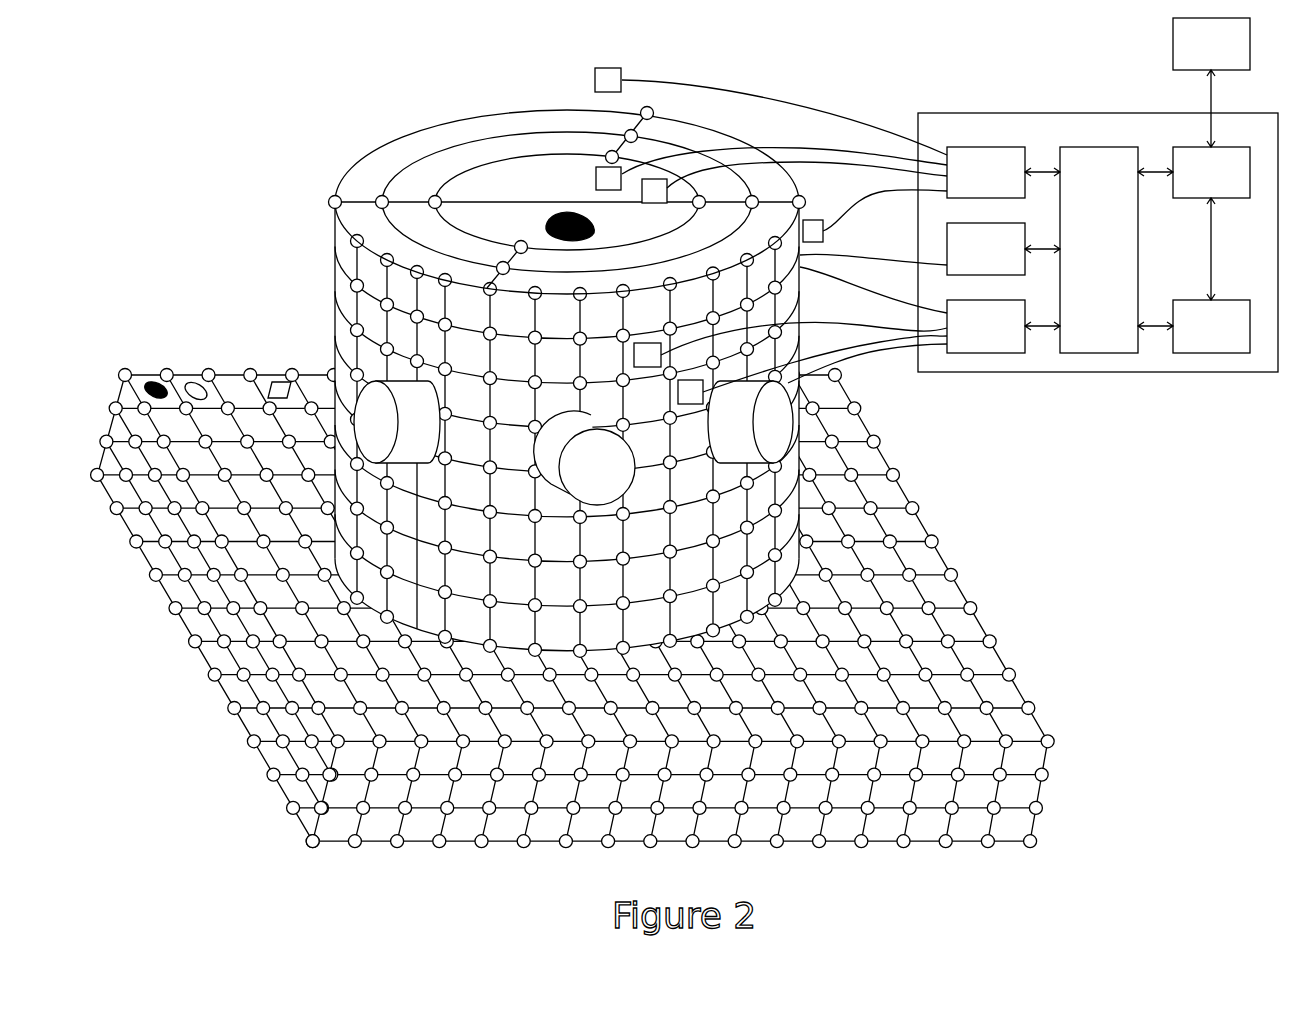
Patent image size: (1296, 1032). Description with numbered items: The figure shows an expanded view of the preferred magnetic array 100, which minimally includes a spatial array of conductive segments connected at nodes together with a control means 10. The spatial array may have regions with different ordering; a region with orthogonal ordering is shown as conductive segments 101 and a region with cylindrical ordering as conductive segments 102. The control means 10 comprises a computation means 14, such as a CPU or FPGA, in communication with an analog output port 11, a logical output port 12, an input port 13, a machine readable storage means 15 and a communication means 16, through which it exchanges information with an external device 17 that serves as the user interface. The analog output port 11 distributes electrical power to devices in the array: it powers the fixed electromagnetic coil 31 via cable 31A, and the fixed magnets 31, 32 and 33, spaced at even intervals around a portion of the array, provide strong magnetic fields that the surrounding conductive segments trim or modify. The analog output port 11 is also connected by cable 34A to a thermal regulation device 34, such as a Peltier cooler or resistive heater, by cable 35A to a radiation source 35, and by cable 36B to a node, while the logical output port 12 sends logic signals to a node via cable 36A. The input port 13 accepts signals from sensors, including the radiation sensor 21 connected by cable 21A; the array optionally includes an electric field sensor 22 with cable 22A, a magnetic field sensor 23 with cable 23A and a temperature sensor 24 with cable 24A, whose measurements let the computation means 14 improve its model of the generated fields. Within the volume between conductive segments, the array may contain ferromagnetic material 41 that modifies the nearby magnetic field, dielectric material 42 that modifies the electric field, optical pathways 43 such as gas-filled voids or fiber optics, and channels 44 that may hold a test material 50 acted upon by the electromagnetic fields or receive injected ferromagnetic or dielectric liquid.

The control means 10 is at (1170, 373).
The analog output port 11 is at (986, 326).
The logical output port 12 is at (986, 249).
The input port 13 is at (986, 172).
The computation means 14 is at (1099, 250).
The machine readable storage means 15 is at (1211, 326).
The communication means 16 is at (1211, 172).
The external device 17 is at (1211, 44).
The radiation sensor 21 is at (608, 68).
The cable 21A is at (723, 85).
The electric field sensor 22 is at (596, 180).
The cable 22A is at (767, 150).
The magnetic field sensor 23 is at (642, 196).
The cable 23A is at (800, 164).
The temperature sensor 24 is at (823, 238).
The cable 24A is at (850, 203).
The fixed electromagnetic coil 31 is at (760, 436).
The cable 31A is at (857, 351).
The fixed magnet 32 is at (584, 483).
The fixed magnet 33 is at (363, 435).
The thermal regulation device 34 is at (678, 400).
The cable 34A is at (883, 342).
The radiation source 35 is at (634, 358).
The cable 35A is at (900, 335).
The cable 36A is at (912, 266).
The cable 36B is at (867, 298).
The ferromagnetic material 41 is at (152, 383).
The dielectric material 42 is at (195, 383).
The optical pathways 43 is at (279, 382).
The channels 44 is at (517, 177).
The test material 50 is at (556, 224).
The magnetic array 100 is at (1153, 531).
The conductive segments 101 is at (1030, 690).
The conductive segments 102 is at (336, 237).